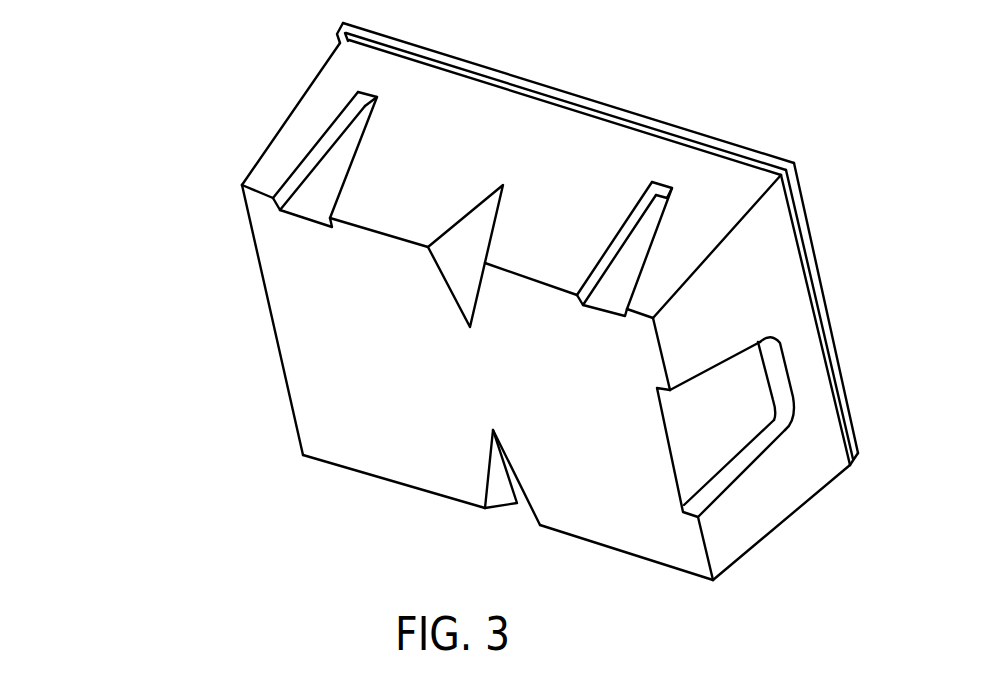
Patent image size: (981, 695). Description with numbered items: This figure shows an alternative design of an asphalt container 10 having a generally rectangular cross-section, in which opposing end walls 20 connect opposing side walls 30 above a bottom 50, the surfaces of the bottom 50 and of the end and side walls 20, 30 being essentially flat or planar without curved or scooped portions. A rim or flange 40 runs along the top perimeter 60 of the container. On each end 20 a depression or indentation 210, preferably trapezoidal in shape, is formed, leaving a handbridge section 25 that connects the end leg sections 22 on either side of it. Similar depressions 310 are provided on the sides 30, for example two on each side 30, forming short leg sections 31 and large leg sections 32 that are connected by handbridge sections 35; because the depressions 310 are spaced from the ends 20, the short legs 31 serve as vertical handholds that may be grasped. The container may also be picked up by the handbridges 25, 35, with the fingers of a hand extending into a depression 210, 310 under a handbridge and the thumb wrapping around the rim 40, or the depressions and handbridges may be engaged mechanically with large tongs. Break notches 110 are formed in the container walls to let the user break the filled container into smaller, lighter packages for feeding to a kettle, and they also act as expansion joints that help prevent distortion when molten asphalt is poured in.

The container 10 is at (858, 127).
The end wall 20 is at (753, 505).
The end leg section 22 is at (772, 267).
The handbridge section 25 is at (812, 402).
The side wall 30 is at (400, 100).
The short leg section 31 is at (290, 146).
The depression 310 is at (297, 203).
The large leg section 32 is at (528, 278).
The handbridge section 35 is at (675, 180).
The rim 40 is at (828, 325).
The bottom 50 is at (305, 383).
The top perimeter 60 is at (683, 138).
The break notch 110 is at (513, 512).
The depression 210 is at (762, 412).